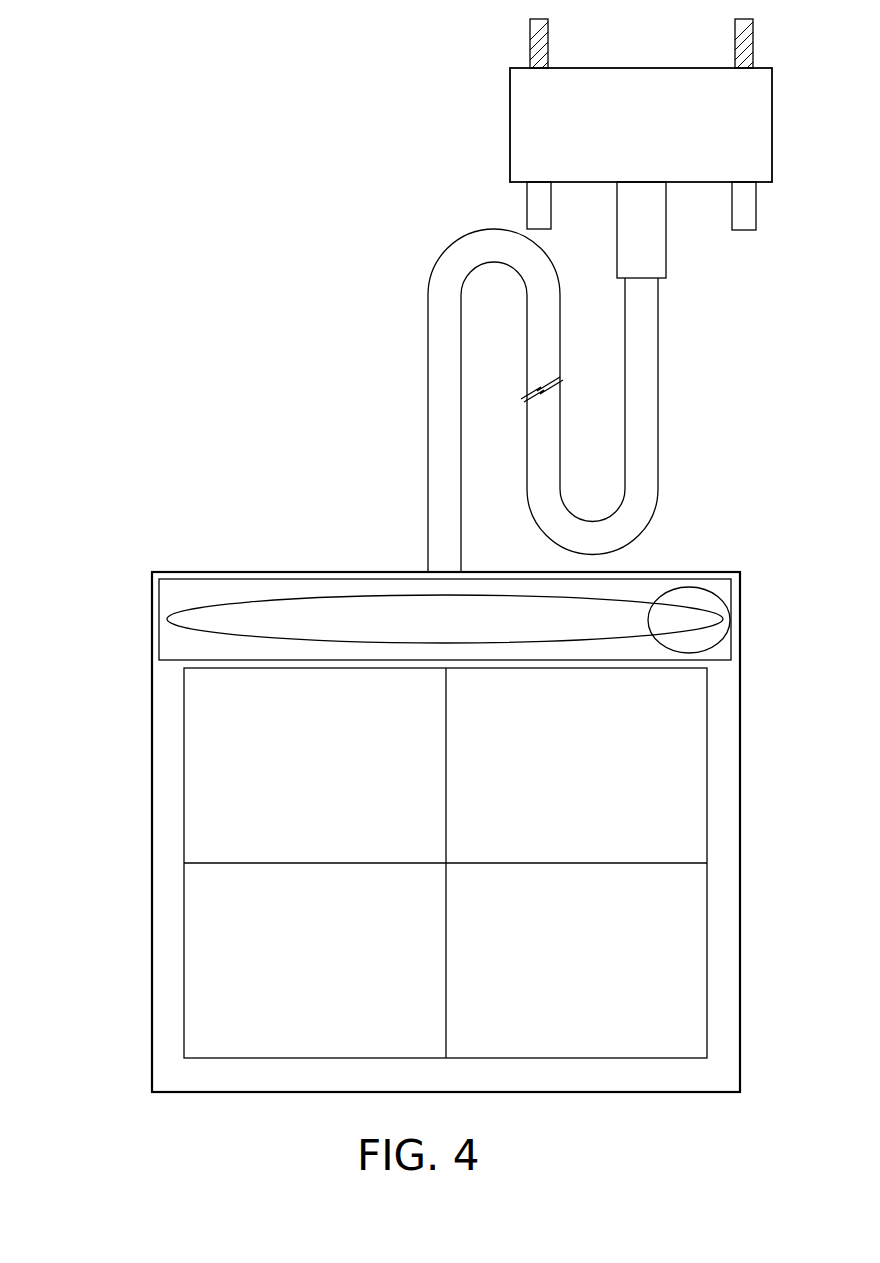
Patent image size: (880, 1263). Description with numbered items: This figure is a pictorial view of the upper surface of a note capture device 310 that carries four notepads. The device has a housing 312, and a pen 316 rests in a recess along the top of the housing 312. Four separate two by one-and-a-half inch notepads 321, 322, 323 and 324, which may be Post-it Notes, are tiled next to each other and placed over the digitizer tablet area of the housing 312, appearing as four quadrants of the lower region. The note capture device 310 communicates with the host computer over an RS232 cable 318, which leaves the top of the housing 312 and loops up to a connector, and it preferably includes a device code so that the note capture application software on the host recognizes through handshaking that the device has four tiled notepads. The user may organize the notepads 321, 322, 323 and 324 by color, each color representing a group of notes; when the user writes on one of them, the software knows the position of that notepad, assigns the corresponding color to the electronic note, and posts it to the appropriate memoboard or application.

The note capture device 310 is at (147, 538).
The housing 312 is at (149, 672).
The pen 316 is at (330, 605).
The RS232 cable 318 is at (428, 367).
The notepad 321 is at (192, 823).
The notepad 322 is at (192, 935).
The notepad 323 is at (698, 823).
The notepad 324 is at (698, 935).